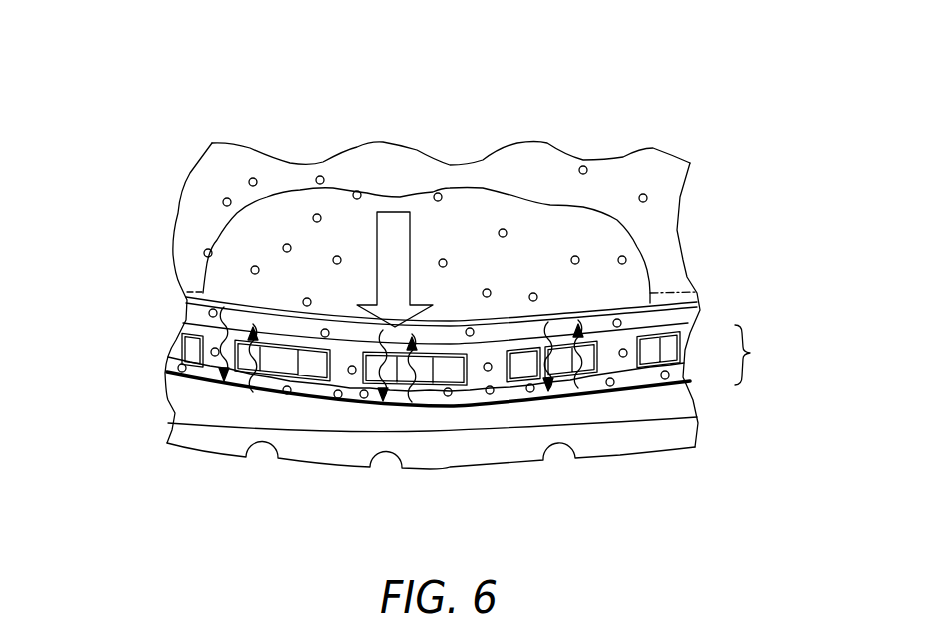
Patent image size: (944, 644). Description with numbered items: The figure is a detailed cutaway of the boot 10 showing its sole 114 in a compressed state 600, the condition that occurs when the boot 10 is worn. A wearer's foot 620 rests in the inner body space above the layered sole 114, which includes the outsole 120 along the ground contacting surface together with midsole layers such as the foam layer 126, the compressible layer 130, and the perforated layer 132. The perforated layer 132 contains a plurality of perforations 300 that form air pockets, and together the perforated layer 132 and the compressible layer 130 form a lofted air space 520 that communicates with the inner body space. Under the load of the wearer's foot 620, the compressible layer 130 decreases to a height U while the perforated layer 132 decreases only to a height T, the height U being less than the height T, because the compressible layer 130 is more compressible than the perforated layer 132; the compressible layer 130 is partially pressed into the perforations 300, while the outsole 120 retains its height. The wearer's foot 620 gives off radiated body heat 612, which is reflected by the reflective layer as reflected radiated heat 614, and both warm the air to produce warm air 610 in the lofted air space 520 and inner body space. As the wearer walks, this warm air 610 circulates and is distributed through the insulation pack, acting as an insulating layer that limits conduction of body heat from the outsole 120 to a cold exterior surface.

The boot 10 is at (168, 128).
The compressed state 600 is at (730, 137).
The warm air 610 is at (249, 183).
The wearer's foot 620 is at (522, 195).
The perforated layer 132 is at (188, 320).
The compressible layer 130 is at (178, 355).
The foam layer 126 is at (188, 395).
The outsole 120 is at (185, 432).
The perforations 300 is at (627, 350).
The lofted air space 520 is at (503, 354).
The sole 114 is at (730, 417).
The radiated body heat 612 is at (538, 378).
The reflected radiated heat 614 is at (588, 380).
The height of the perforated layer in the compressed state T is at (323, 386).
The height of the compressible layer in the compressed state U is at (475, 392).